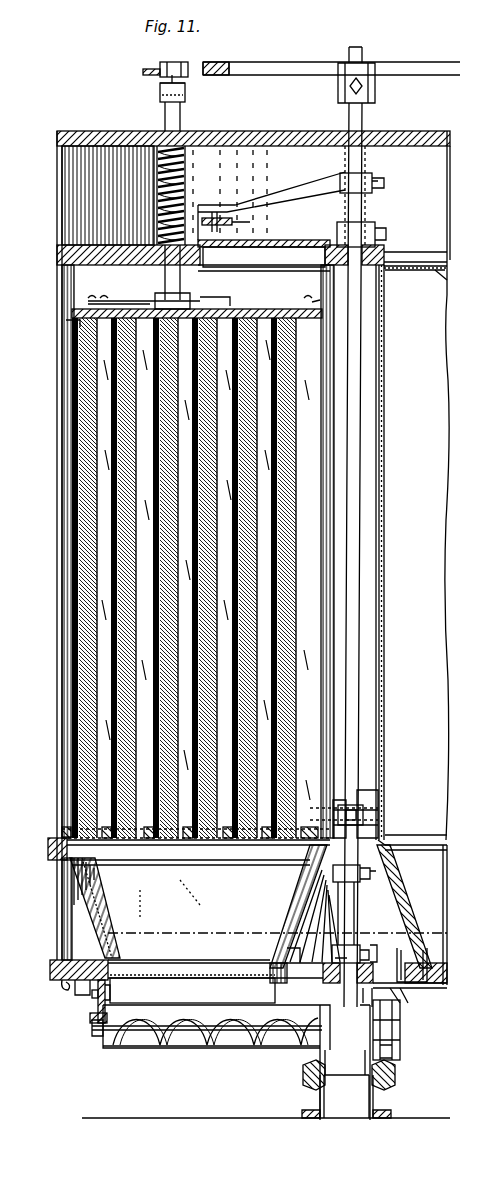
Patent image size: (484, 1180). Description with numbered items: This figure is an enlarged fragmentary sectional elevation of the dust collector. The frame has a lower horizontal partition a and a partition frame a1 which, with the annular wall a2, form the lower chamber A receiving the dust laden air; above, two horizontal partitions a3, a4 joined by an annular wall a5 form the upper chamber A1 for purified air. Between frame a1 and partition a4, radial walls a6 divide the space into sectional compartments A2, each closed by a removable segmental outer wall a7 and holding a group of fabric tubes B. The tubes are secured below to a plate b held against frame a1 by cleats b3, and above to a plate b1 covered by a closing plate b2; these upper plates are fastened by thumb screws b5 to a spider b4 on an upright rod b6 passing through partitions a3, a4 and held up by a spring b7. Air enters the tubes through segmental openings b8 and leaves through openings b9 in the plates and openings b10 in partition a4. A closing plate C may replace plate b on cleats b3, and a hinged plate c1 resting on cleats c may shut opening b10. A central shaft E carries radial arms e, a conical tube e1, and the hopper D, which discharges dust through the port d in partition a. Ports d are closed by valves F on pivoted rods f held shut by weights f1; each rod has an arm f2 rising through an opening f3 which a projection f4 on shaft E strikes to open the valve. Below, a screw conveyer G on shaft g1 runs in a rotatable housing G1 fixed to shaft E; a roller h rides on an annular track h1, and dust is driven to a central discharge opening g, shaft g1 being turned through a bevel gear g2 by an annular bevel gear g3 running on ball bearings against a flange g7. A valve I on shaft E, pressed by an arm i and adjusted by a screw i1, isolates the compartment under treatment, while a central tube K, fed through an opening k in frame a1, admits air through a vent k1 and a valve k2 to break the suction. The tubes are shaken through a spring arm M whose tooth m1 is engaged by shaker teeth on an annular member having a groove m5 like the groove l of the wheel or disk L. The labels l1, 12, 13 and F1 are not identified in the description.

The upper horizontal partition a3 is at (82, 131).
The annular wall a5 is at (62, 205).
The segmental outer wall a7 is at (62, 428).
The sectional compartment A2 is at (60, 540).
The upper horizontal partition a4 is at (57, 256).
The upper chamber A1 is at (392, 192).
The spring arm M is at (158, 100).
The upwardly extending tooth m1 is at (160, 88).
The groove m5 is at (190, 78).
The spring b7 is at (157, 205).
The wheel or disk L is at (258, 62).
The groove l is at (228, 63).
The lever end l1 is at (220, 72).
The central upright shaft E is at (366, 492).
The arm i is at (300, 190).
The adjusting screw i1 is at (235, 222).
The valve I is at (312, 240).
The openings b10 is at (268, 258).
The segmental closing plate C is at (255, 300).
The closing plate c1 is at (408, 268).
The supporting cleats c is at (438, 275).
The radial walls a6 is at (277, 343).
The closing plate b2 is at (72, 311).
The upper securing plate b1 is at (68, 323).
The spider b4 is at (90, 299).
The thumb screws b5 is at (165, 294).
The upright rod b6 is at (178, 288).
The holes or openings b9 is at (219, 293).
The tubes B is at (200, 520).
The central air tube K is at (386, 628).
The vent k1 is at (340, 790).
The valve k2 is at (380, 818).
The coupling pin 13 is at (320, 796).
The cleats b3 is at (100, 836).
The lower securing plate b is at (52, 840).
The segmental openings b8 is at (238, 866).
The dust hopper D is at (198, 906).
The annular wall a2 is at (57, 900).
The partition frame a1 is at (60, 870).
The section line 12 is at (60, 925).
The lower chamber A is at (410, 890).
The opening k is at (392, 870).
The radial arms e is at (362, 882).
The conical tube e1 is at (386, 922).
The finger or projection f4 is at (295, 935).
The lower horizontal partition a is at (55, 962).
The dust discharge port d is at (165, 962).
The arm f2 is at (290, 950).
The outlet flange F1 is at (448, 984).
The rod f is at (430, 965).
The weight f1 is at (60, 988).
The openings f3 is at (405, 992).
The valve F is at (192, 989).
The roller h is at (95, 1025).
The annular track h1 is at (90, 1010).
The conveyer G is at (175, 1050).
The conveyer housing G1 is at (255, 1048).
The discharge opening g is at (345, 1062).
The conveyer shaft g1 is at (335, 1040).
The bevel gear g2 is at (402, 1052).
The annular bevel gear g3 is at (397, 1078).
The outwardly extending flange g7 is at (266, 1096).